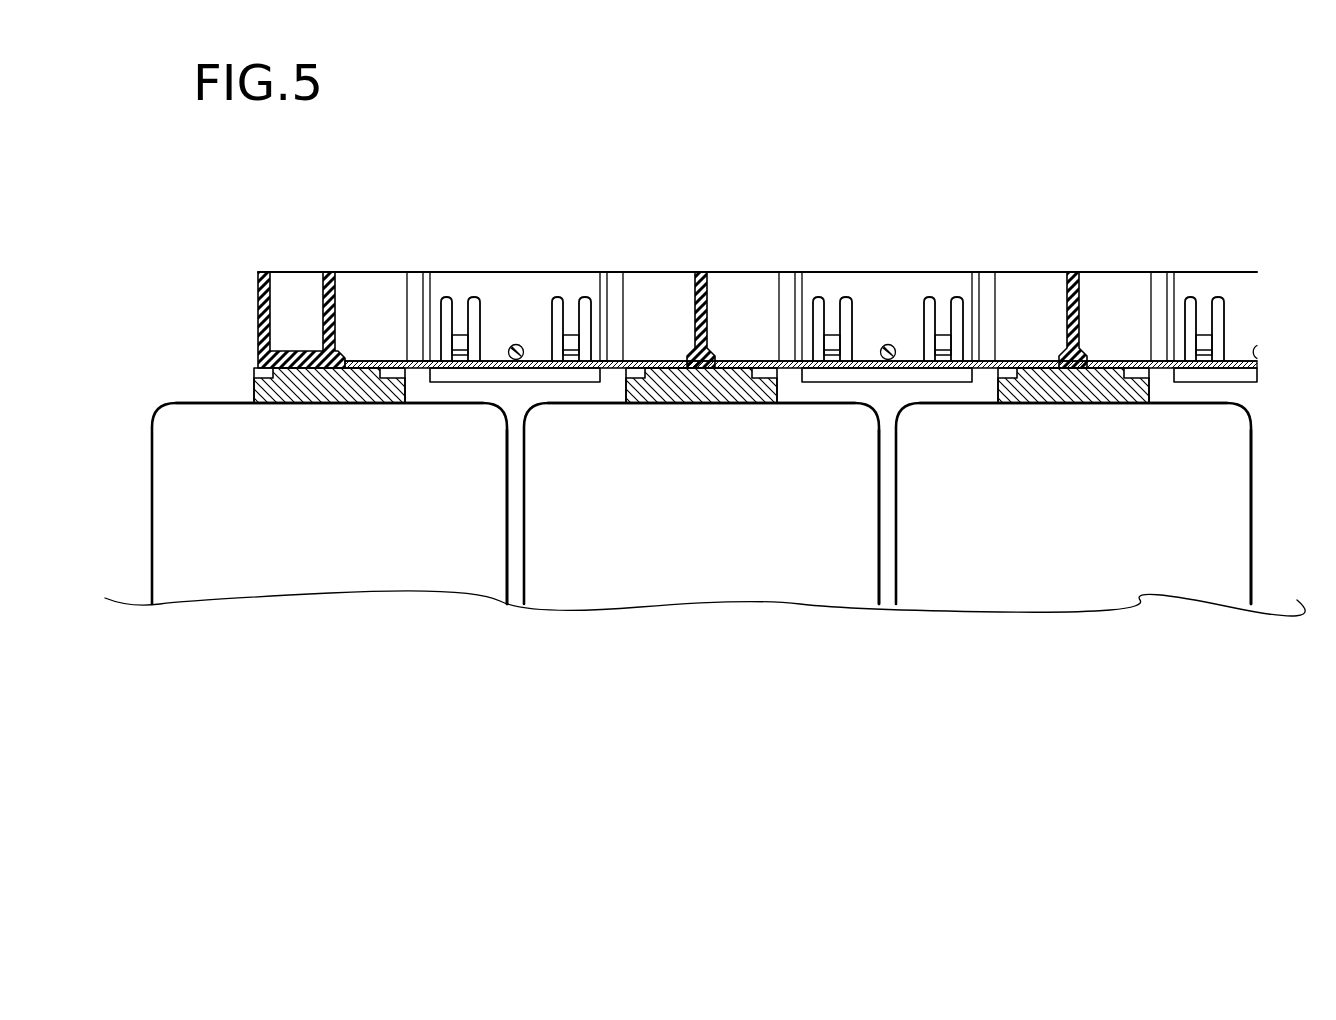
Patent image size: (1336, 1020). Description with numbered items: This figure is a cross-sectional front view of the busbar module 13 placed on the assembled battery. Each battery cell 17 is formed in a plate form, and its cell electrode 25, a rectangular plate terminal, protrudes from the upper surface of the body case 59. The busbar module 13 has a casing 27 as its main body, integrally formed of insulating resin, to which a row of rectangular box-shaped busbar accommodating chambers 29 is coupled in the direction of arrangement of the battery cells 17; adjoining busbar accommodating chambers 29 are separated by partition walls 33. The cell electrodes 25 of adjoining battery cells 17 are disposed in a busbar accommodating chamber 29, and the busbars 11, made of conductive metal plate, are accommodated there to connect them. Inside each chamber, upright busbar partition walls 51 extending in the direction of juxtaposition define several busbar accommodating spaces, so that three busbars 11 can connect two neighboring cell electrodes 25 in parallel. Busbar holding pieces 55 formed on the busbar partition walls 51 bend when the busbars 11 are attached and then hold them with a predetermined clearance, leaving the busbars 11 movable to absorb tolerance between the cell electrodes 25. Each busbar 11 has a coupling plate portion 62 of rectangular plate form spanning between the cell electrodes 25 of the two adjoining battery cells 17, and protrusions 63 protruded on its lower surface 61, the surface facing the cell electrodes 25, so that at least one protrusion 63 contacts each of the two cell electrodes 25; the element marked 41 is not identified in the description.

The busbar 11 is at (397, 346).
The busbar module 13 is at (256, 268).
The battery cell 17 is at (316, 575).
The cell electrode 25 is at (297, 404).
The casing 27 is at (258, 310).
The busbar accommodating chamber 29 is at (529, 258).
The partition wall 33 is at (698, 282).
The fastening pin 41 is at (518, 361).
The busbar partition wall 51 is at (503, 290).
The busbar holding piece 55 is at (458, 320).
The body case 59 is at (504, 574).
The lower surface 61 is at (470, 384).
The coupling plate portion 62 is at (488, 359).
The protrusion 63 is at (370, 400).